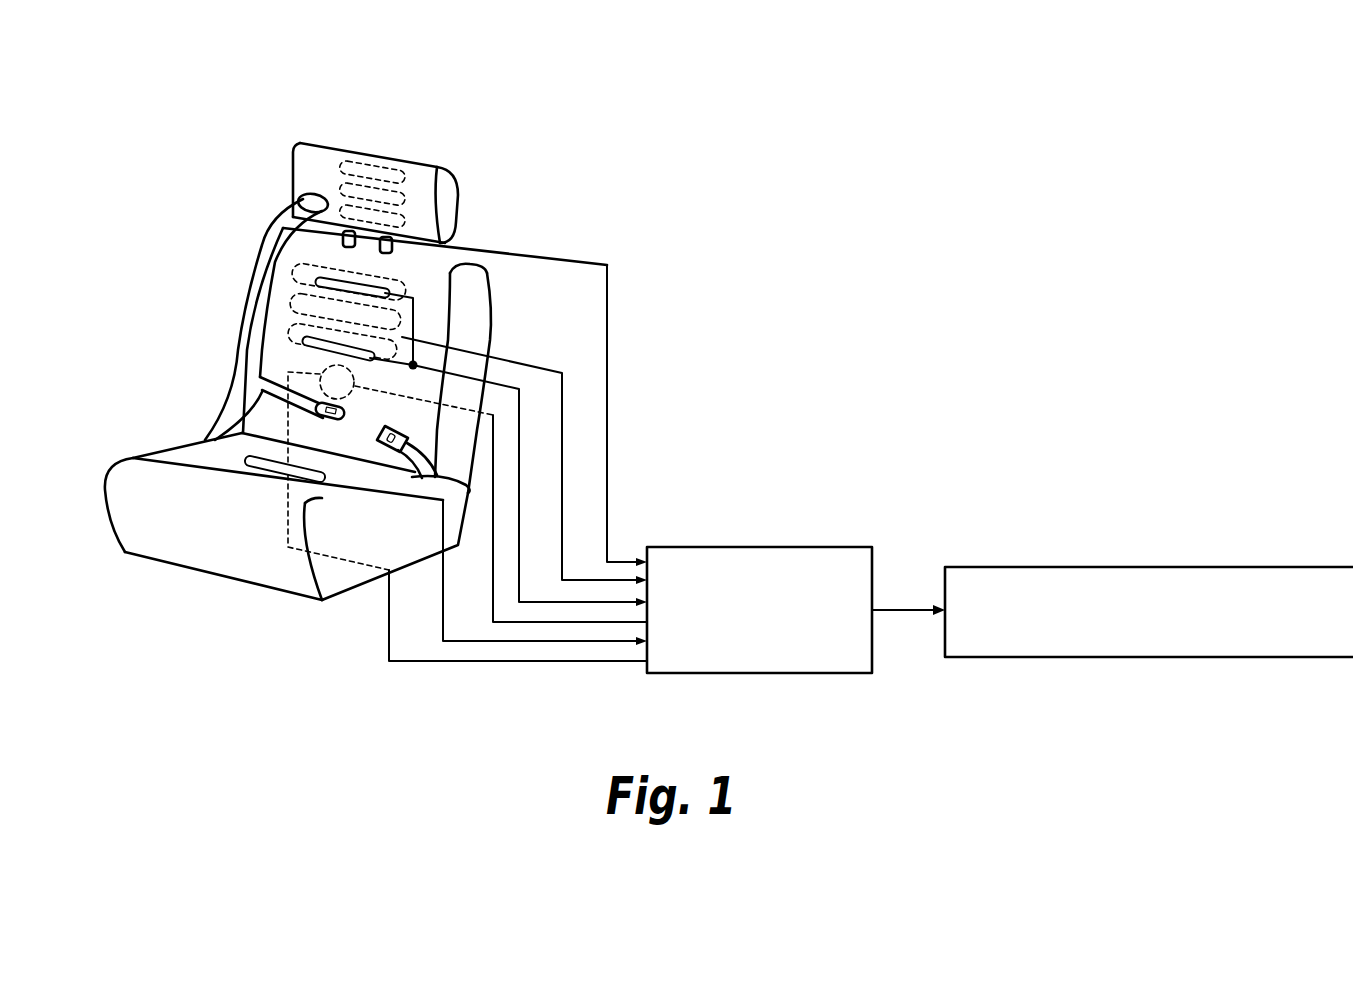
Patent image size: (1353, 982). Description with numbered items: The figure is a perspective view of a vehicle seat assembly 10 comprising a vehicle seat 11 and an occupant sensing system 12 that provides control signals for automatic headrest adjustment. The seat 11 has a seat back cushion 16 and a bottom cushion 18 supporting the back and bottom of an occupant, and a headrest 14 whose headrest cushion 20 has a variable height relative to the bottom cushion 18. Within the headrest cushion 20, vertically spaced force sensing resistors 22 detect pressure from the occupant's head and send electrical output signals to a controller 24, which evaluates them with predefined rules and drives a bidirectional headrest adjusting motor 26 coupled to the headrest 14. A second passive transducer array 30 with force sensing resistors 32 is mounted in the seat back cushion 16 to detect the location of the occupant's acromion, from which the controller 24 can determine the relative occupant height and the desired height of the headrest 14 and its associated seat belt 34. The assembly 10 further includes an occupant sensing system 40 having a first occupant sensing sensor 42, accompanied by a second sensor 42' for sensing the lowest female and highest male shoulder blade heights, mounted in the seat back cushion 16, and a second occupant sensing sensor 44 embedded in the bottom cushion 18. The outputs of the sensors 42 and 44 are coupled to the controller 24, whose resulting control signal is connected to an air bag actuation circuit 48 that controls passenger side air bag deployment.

The vehicle seat assembly 10 is at (900, 250).
The vehicle seat 11 is at (496, 302).
The occupant sensing system 12 is at (553, 240).
The headrest 14 is at (466, 180).
The seat back cushion 16 is at (437, 320).
The bottom cushion 18 is at (268, 481).
The headrest cushion 20 is at (318, 165).
The force sensing resistors 22 is at (408, 108).
The controller 24 is at (790, 547).
The headrest adjusting motor 26 is at (320, 374).
The passive transducer array 30 is at (235, 232).
The force sensing resistors 32 is at (290, 298).
The seat belt 34 is at (296, 212).
The occupant sensing system 40 is at (155, 382).
The first occupant sensing sensor 42 is at (397, 449).
The second sensor 42' is at (456, 275).
The second occupant sensing sensor 44 is at (245, 462).
The air bag actuation circuit 48 is at (1158, 568).